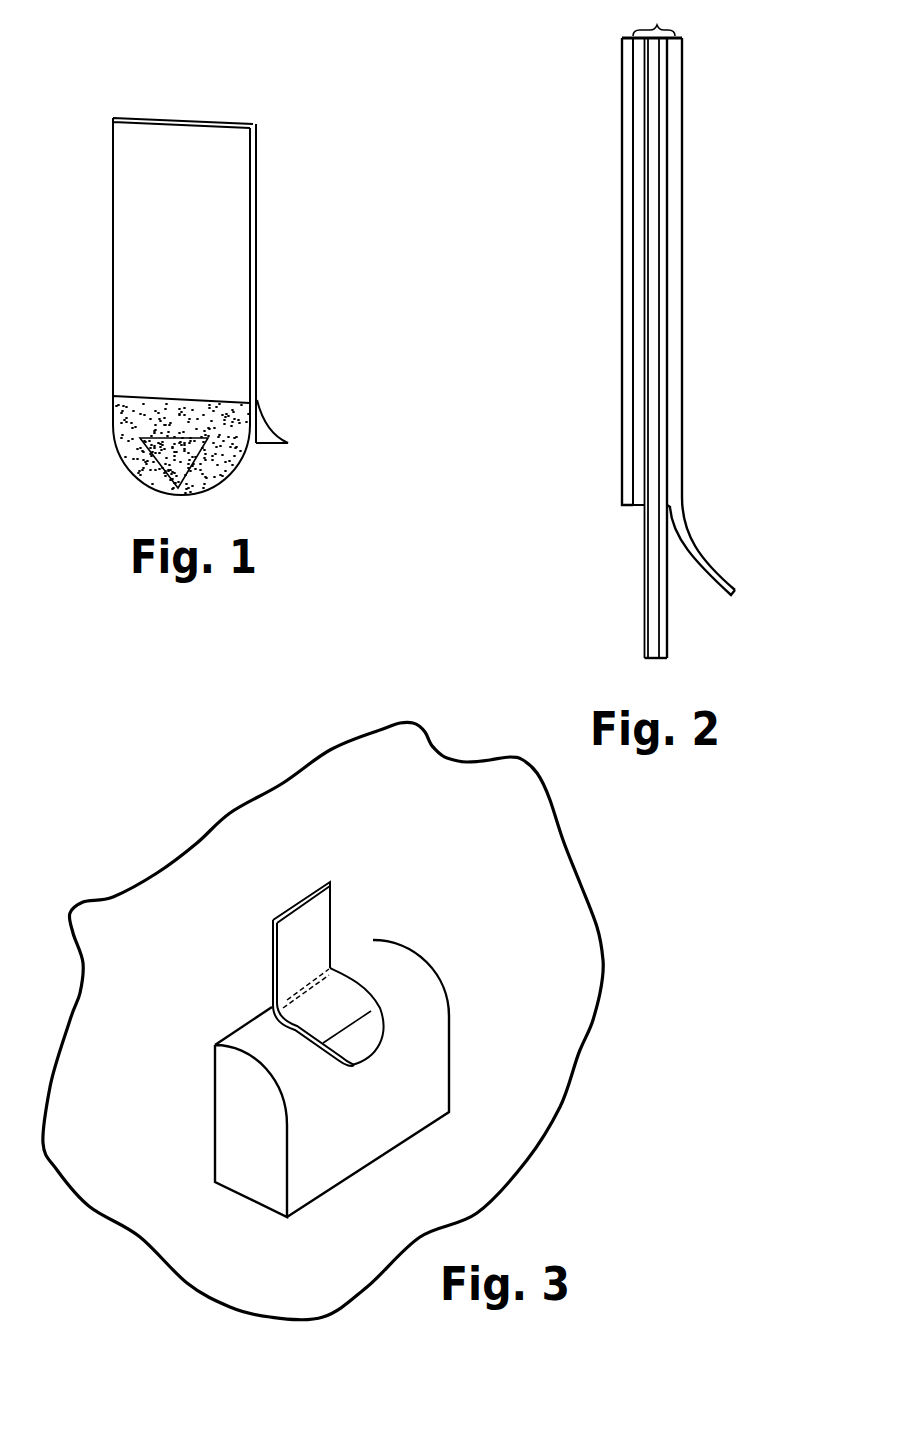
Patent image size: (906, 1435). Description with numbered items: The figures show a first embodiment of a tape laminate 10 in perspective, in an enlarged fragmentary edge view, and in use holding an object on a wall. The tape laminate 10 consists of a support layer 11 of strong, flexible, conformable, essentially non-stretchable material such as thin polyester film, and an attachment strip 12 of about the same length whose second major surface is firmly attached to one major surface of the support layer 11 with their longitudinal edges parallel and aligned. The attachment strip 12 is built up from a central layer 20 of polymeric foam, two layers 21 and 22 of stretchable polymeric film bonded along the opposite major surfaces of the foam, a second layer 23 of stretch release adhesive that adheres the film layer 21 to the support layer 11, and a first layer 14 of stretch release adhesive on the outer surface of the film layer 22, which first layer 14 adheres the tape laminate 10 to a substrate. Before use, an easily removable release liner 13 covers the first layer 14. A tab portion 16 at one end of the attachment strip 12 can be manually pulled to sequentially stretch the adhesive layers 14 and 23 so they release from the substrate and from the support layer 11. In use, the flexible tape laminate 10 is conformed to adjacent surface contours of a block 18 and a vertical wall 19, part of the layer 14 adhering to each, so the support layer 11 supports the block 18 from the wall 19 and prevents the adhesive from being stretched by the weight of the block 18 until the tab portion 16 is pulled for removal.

In FIG. 1, the tape laminate 10 is at (307, 142).
In FIG. 2, the tape laminate 10 is at (582, 152).
In FIG. 3, the tape laminate 10 is at (335, 908).
In FIG. 1, the support layer 11 is at (192, 256).
In FIG. 2, the support layer 11 is at (623, 333).
In FIG. 1, the attachment strip 12 is at (258, 272).
In FIG. 2, the attachment strip 12 is at (654, 18).
In FIG. 3, the attachment strip 12 is at (275, 938).
In FIG. 1, the release liner 13 is at (263, 437).
In FIG. 2, the release liner 13 is at (700, 553).
In FIG. 1, the first layer of stretch release adhesive 14 is at (258, 348).
In FIG. 2, the first layer of stretch release adhesive 14 is at (673, 138).
In FIG. 3, the first layer of stretch release adhesive 14 is at (292, 1027).
In FIG. 1, the tab portion 16 is at (217, 490).
In FIG. 2, the tab portion 16 is at (643, 612).
In FIG. 3, the tab portion 16 is at (358, 1050).
In FIG. 3, the block 18 is at (427, 1000).
In FIG. 3, the vertical wall 19 is at (183, 937).
In FIG. 2, the central layer of polymeric foam 20 is at (653, 376).
In FIG. 2, the layer of stretchable polymeric film 21 is at (646, 292).
In FIG. 2, the layer of stretchable polymeric film 22 is at (662, 245).
In FIG. 2, the second layer of stretch release adhesive 23 is at (637, 442).